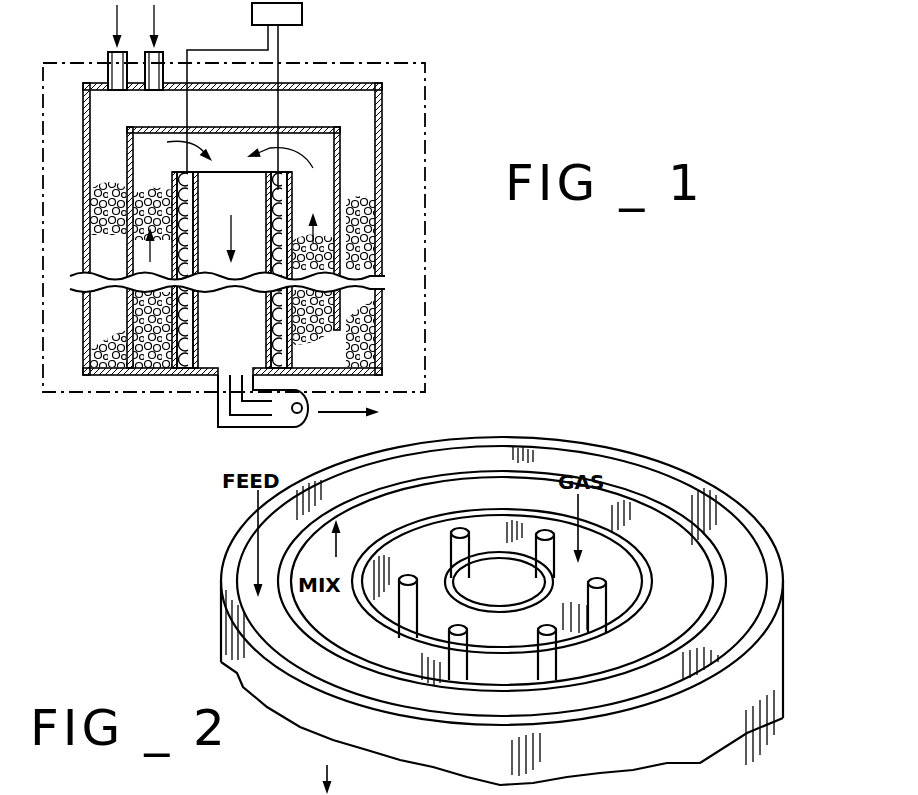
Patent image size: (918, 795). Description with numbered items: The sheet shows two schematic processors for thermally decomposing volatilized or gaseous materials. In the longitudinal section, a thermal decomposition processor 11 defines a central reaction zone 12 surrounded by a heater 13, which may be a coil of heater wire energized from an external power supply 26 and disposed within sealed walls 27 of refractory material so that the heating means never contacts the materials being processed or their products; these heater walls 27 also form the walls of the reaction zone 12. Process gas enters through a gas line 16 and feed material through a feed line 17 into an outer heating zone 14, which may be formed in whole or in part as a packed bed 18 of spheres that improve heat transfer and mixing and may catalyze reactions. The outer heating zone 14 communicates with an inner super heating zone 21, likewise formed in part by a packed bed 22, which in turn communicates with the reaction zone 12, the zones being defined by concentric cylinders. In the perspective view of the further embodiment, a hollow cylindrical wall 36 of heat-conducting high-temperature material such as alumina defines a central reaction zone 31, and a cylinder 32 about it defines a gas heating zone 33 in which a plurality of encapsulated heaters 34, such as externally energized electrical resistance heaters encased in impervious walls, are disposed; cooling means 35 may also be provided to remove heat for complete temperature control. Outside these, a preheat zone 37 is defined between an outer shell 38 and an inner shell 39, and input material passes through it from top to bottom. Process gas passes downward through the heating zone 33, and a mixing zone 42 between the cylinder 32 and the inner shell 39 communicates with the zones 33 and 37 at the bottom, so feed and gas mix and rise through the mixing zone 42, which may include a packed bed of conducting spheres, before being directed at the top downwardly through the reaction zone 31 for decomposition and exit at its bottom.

In FIG. 1, the thermal decomposition processor 11 is at (400, 139).
In FIG. 1, the central reaction zone 12 is at (240, 200).
In FIG. 1, the heater 13 is at (290, 173).
In FIG. 1, the outer heating zone 14 is at (98, 162).
In FIG. 1, the gas line 16 is at (108, 55).
In FIG. 1, the feed line 17 is at (164, 57).
In FIG. 1, the packed bed 18 is at (92, 207).
In FIG. 1, the inner super heating zone 21 is at (130, 253).
In FIG. 1, the packed bed 22 is at (148, 190).
In FIG. 1, the external power supply 26 is at (305, 13).
In FIG. 1, the sealed walls 27 is at (296, 201).
In FIG. 2, the central reaction zone 31 is at (528, 594).
In FIG. 2, the cylinder 32 is at (498, 560).
In FIG. 2, the gas heating zone 33 is at (430, 559).
In FIG. 2, the encapsulated heaters 34 is at (543, 531).
In FIG. 2, the cooling means 35 is at (457, 532).
In FIG. 2, the hollow cylindrical wall 36 is at (563, 578).
In FIG. 2, the preheat zone 37 is at (758, 591).
In FIG. 2, the outer shell 38 is at (717, 488).
In FIG. 2, the inner shell 39 is at (615, 483).
In FIG. 2, the mixing zone 42 is at (636, 664).